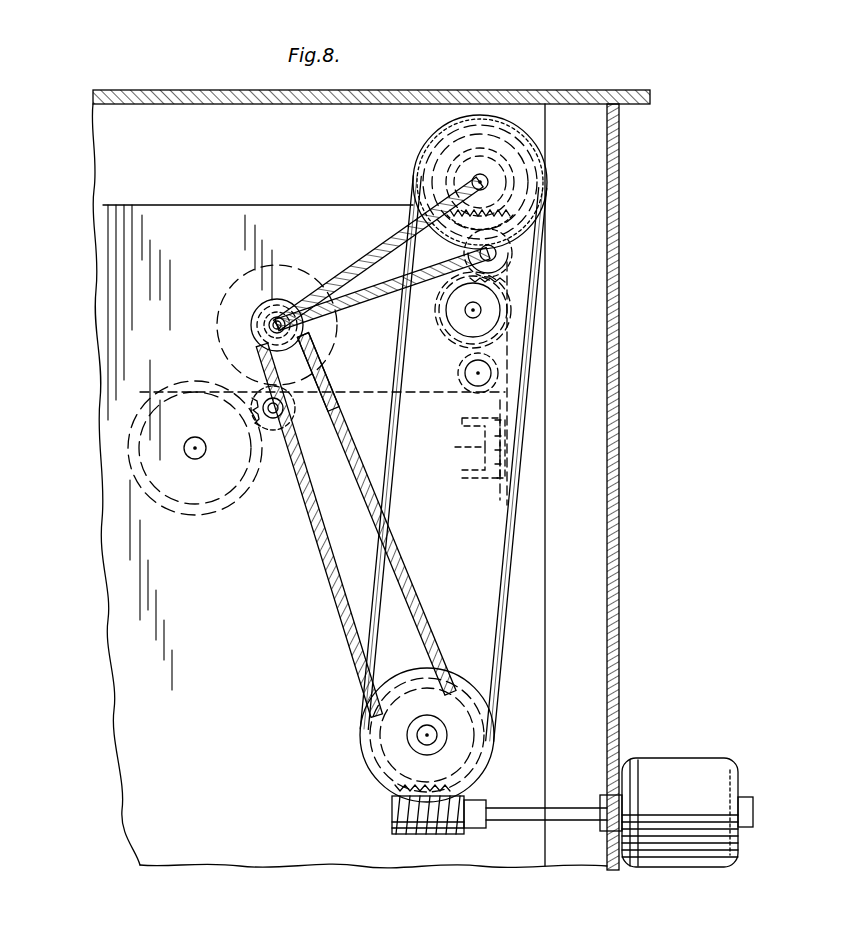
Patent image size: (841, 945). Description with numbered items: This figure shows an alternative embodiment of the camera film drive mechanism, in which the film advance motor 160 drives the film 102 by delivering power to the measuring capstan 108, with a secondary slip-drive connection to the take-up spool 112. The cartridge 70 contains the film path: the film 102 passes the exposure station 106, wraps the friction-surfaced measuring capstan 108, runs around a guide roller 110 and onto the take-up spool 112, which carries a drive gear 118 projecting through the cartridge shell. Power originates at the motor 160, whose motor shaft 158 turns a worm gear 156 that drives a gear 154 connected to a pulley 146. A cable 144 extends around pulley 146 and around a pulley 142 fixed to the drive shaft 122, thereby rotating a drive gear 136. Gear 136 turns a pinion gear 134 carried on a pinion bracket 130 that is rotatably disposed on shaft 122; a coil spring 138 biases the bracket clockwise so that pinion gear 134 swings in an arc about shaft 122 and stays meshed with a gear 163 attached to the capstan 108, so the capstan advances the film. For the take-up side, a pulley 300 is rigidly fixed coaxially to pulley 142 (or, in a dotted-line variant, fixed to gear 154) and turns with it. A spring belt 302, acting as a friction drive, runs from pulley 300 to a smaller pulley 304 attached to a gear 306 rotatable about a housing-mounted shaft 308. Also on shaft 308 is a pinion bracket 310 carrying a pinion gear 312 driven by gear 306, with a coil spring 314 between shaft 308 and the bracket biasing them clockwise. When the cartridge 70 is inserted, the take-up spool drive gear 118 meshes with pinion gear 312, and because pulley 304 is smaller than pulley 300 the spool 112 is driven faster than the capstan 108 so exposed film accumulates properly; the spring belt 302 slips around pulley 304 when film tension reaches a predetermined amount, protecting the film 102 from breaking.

The cartridge 70 is at (546, 520).
The film 102 is at (505, 396).
The exposure station 106 is at (478, 480).
The measuring capstan 108 is at (470, 327).
The guide roller 110 is at (465, 373).
The take-up spool 112 is at (252, 470).
The drive gear 118 is at (298, 458).
The drive shaft 122 is at (490, 178).
The pinion bracket 130 is at (512, 200).
The pinion gear 134 is at (498, 258).
The drive gear 136 is at (462, 226).
The coil spring 138 is at (436, 150).
The pulley 142 is at (548, 190).
The cable 144 is at (372, 604).
The pulley 146 is at (460, 692).
The gear 154 is at (478, 766).
The worm gear 156 is at (392, 840).
The motor shaft 158 is at (520, 822).
The film advance motor 160 is at (692, 768).
The gear 163 is at (494, 284).
The pulley 300 is at (516, 136).
The spring belt 302 is at (345, 240).
The pulley 304 is at (300, 300).
The gear 306 is at (228, 298).
The shaft 308 is at (258, 326).
The pinion bracket 310 is at (318, 358).
The pinion gear 312 is at (288, 424).
The coil spring 314 is at (246, 356).